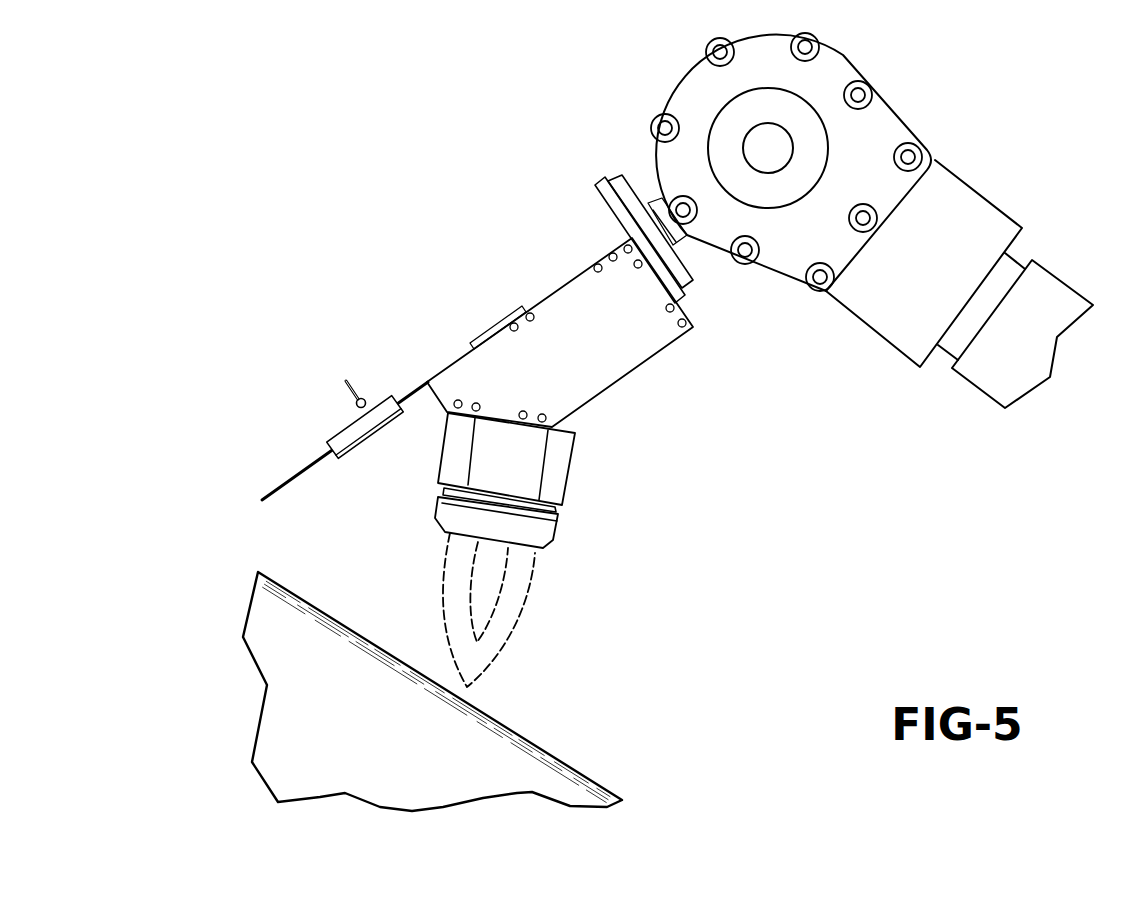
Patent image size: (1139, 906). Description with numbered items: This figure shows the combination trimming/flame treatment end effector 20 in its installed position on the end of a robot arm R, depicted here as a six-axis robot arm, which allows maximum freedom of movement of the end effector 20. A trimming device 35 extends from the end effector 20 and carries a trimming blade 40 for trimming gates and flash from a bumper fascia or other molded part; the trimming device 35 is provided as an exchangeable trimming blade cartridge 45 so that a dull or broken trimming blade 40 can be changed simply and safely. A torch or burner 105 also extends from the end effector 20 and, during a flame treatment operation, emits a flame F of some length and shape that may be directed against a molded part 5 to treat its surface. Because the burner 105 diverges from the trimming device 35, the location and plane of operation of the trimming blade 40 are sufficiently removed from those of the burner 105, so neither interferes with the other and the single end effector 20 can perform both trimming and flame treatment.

The workpiece surface 5 is at (563, 750).
The combination trimming/flame treatment robot end effector 20 is at (518, 242).
The trimming device 35 is at (308, 370).
The trimming blade 40 is at (298, 472).
The exchangeable trimming blade cartridge 45 is at (372, 370).
The torch (burner) 105 is at (578, 490).
The flame F is at (535, 602).
The robot arm R is at (988, 163).